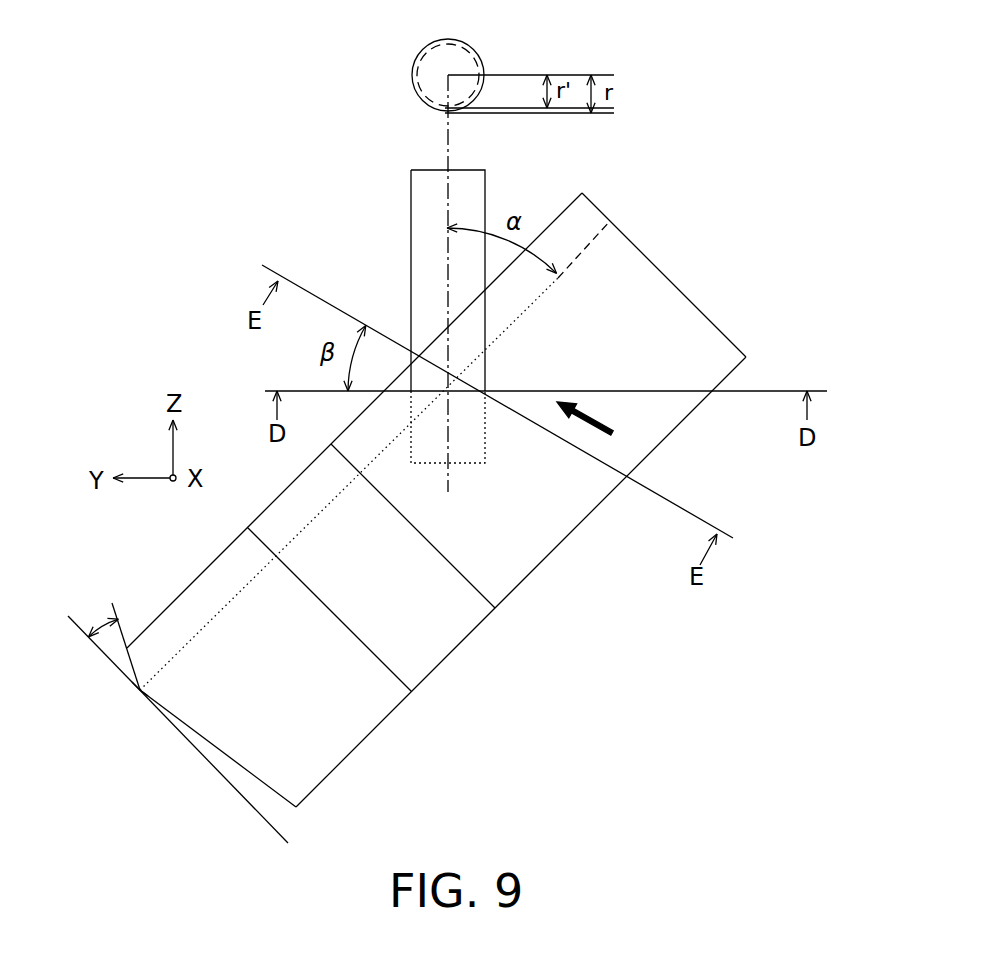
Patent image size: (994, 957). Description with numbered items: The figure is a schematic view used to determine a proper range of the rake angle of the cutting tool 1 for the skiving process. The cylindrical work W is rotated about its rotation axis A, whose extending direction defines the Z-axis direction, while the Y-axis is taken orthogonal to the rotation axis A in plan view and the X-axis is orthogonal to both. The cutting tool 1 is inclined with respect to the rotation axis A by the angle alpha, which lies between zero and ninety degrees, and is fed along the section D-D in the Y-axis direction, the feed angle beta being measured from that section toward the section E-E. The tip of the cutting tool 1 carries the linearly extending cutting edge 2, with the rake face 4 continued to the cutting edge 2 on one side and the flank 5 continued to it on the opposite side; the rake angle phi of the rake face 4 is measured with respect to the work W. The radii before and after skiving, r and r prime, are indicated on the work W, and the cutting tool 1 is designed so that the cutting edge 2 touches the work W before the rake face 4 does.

The cutting tool 1 is at (718, 305).
The cutting edge 2 is at (140, 690).
The rake face 4 is at (130, 655).
The flank 5 is at (268, 786).
The work W is at (402, 202).
The rotation axis A is at (450, 133).